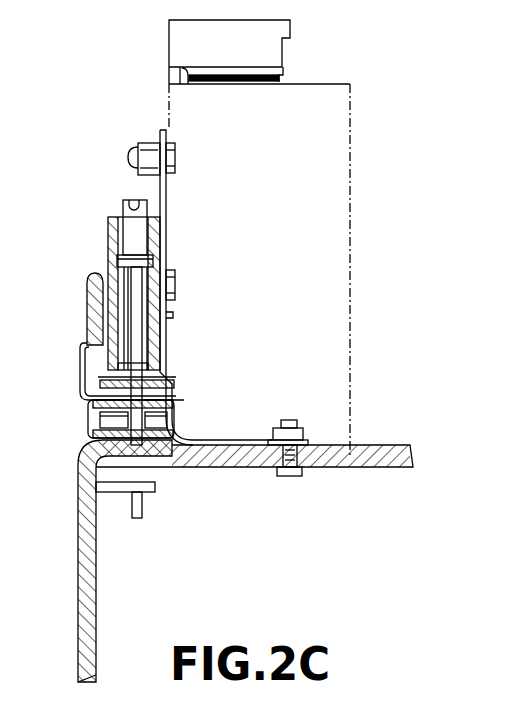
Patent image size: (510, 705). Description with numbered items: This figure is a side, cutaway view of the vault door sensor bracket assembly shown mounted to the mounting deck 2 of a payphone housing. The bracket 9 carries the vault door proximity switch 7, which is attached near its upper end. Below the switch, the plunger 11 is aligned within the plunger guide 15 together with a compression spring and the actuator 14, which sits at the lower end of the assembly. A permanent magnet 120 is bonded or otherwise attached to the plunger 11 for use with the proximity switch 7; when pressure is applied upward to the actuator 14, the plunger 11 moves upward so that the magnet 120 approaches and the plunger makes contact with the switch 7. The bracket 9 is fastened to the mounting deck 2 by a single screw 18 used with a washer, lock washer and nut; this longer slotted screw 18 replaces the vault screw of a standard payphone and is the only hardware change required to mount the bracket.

The mounting deck 2 is at (382, 446).
The vault door proximity switch 7 is at (150, 143).
The bracket 9 is at (163, 130).
The plunger 11 is at (123, 207).
The actuator 14 is at (84, 416).
The plunger guide 15 is at (108, 242).
The screw 18 is at (302, 432).
The permanent magnet 120 is at (134, 200).